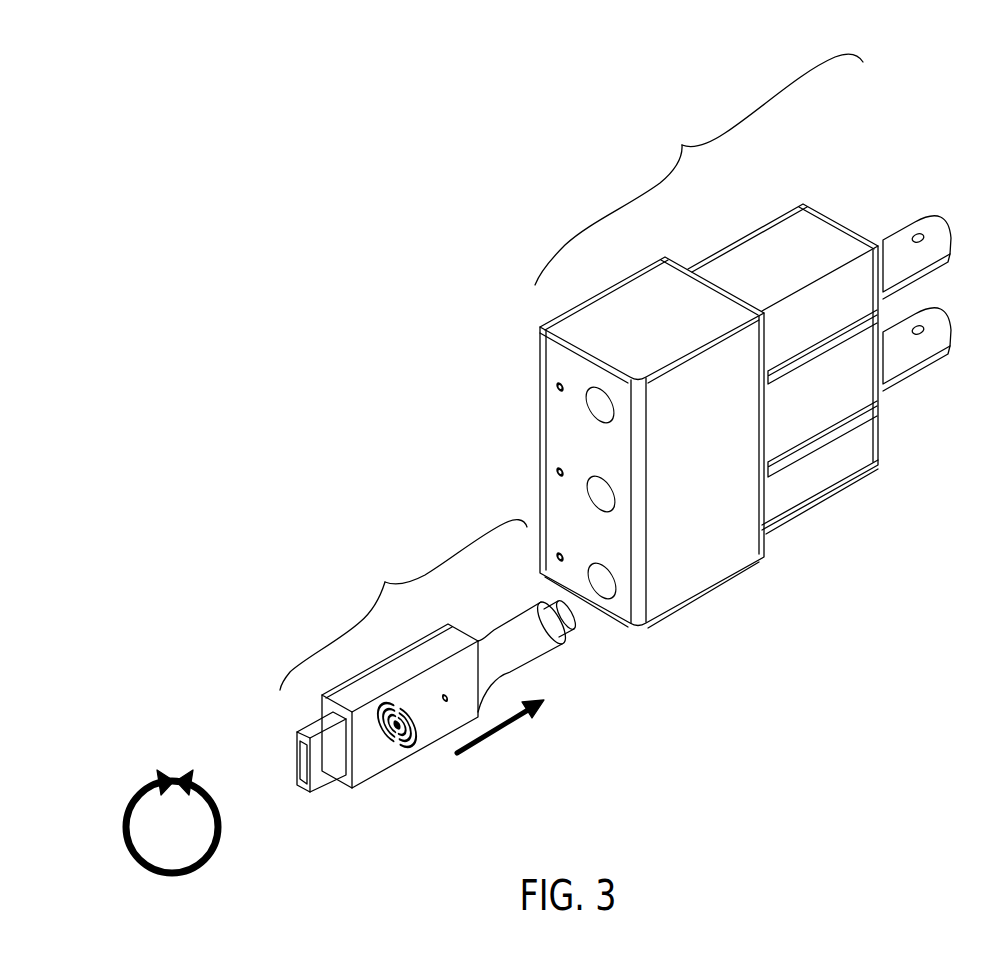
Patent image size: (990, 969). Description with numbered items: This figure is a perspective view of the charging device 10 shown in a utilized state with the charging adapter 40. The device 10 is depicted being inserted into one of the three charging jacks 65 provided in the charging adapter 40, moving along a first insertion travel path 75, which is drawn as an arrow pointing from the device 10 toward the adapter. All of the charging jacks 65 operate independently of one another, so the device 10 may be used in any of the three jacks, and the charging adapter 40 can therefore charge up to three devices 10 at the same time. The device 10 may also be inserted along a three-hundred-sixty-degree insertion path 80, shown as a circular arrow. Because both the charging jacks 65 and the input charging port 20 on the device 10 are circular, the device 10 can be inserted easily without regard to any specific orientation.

The device 10 is at (385, 582).
The input charging port 20 is at (567, 612).
The charging adapter 40 is at (682, 145).
The charging jacks 65 is at (645, 627).
The first insertion travel path "1" 75 is at (540, 703).
The 360-degree insertion path "c" 80 is at (160, 815).